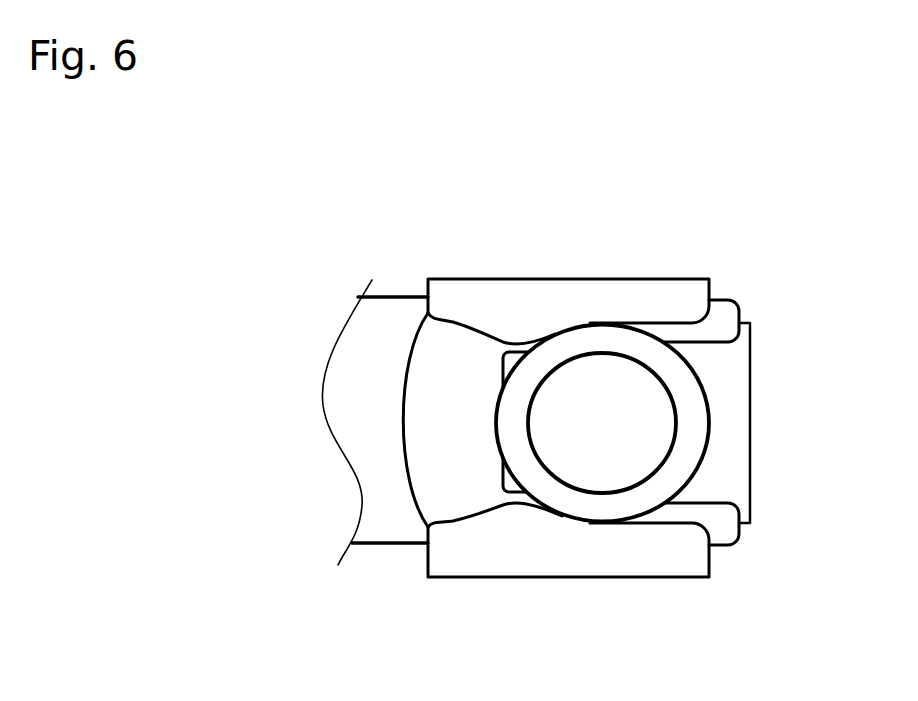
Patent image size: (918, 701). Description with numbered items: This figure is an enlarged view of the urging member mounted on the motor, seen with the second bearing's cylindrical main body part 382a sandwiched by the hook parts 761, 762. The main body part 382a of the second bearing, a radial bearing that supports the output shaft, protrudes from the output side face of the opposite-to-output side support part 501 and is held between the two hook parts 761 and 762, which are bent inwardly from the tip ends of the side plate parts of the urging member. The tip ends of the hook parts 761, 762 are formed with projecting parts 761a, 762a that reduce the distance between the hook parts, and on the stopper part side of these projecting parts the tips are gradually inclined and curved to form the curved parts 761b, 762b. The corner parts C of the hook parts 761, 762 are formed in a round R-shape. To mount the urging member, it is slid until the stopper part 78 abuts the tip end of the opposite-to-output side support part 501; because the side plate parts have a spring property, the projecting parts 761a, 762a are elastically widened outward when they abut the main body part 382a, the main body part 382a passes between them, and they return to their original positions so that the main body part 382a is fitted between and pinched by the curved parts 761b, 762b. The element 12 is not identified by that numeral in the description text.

The opposite-to-output side support part 501 is at (367, 320).
The hook part 762 is at (463, 290).
The projecting part 762a is at (525, 343).
The curved part 762b is at (590, 326).
The hook part 761 is at (463, 557).
The projecting part 761a is at (522, 503).
The curved part 761b is at (590, 520).
The cylindrical main body part 382a is at (706, 393).
The stopper part 78 is at (742, 432).
The rotary shaft 12 is at (677, 440).
The corner parts C is at (428, 320).